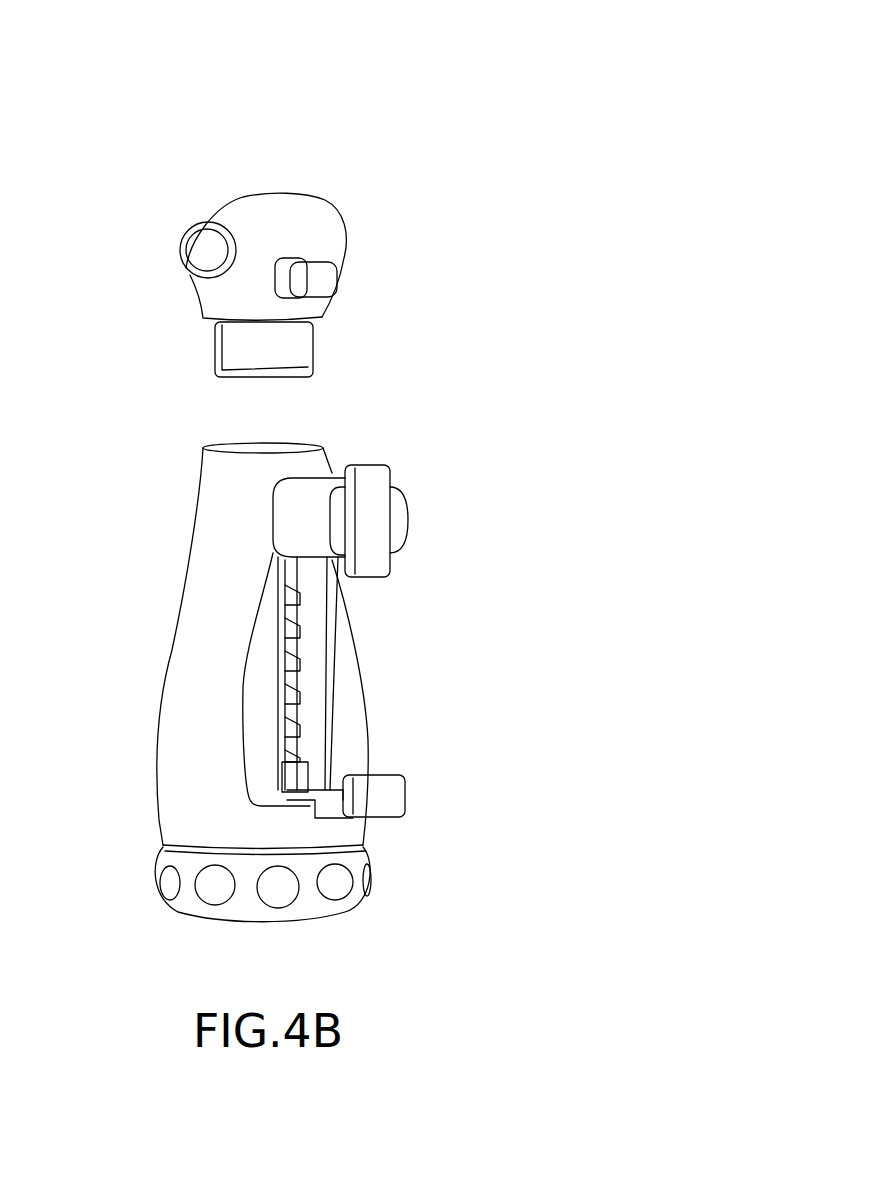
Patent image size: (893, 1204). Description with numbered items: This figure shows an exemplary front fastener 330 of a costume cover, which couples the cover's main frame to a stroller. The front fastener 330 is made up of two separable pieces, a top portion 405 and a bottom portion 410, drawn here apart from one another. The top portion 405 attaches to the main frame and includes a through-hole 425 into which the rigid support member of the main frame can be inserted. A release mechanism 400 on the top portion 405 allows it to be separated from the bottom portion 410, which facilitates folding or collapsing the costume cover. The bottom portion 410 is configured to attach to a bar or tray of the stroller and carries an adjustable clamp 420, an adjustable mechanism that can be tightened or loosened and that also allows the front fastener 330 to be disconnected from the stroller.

The front fastener 330 is at (463, 97).
The top portion 405 is at (268, 213).
The through-hole 425 is at (182, 244).
The release mechanism 400 is at (327, 273).
The bottom portion 410 is at (188, 650).
The adjustable clamp 420 is at (420, 438).